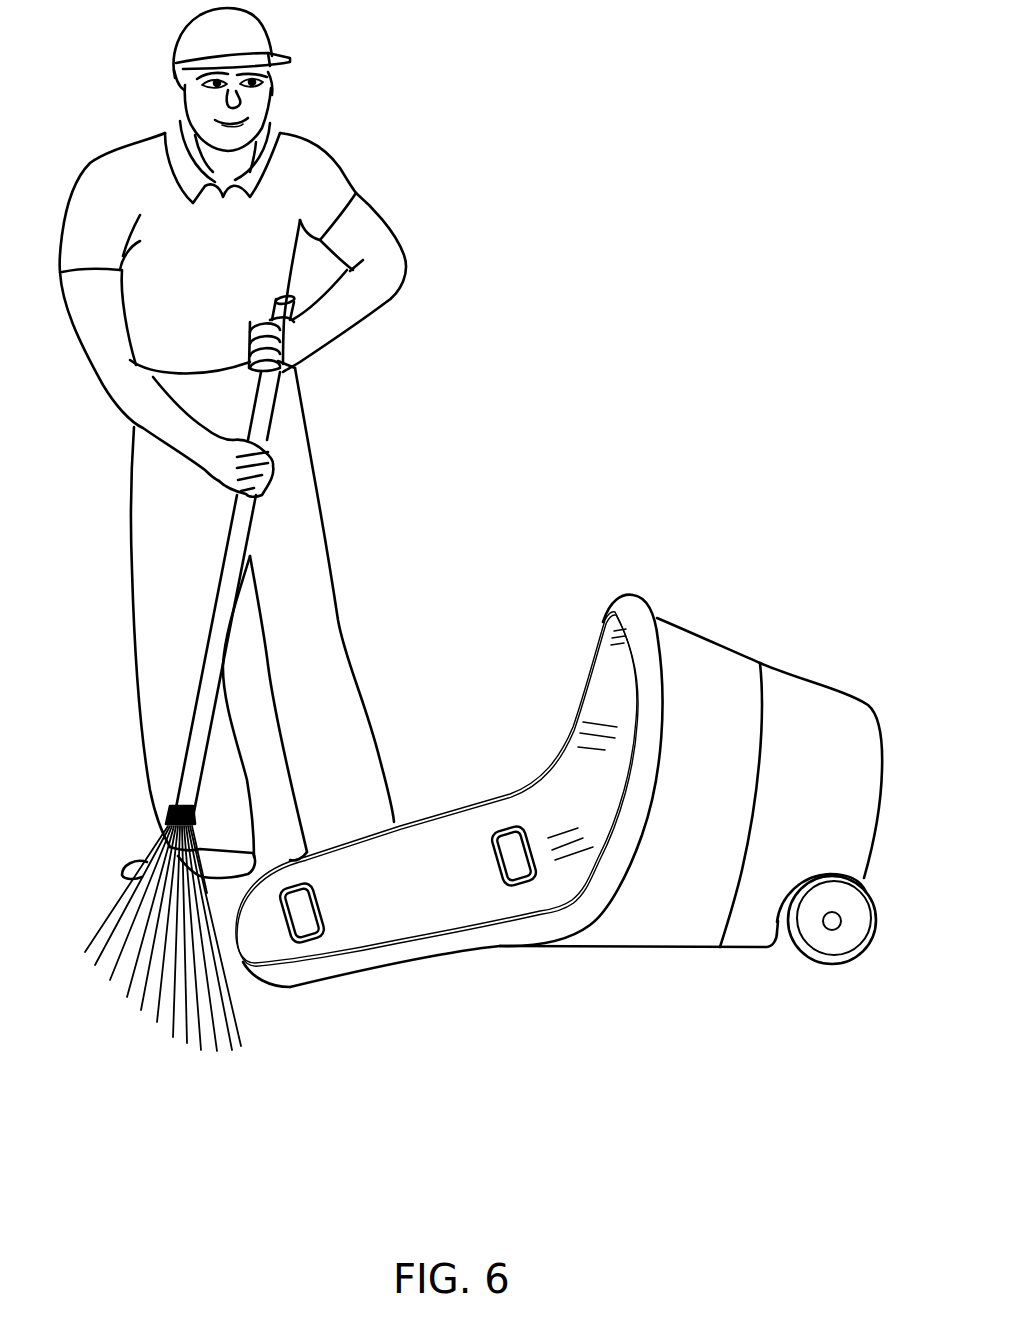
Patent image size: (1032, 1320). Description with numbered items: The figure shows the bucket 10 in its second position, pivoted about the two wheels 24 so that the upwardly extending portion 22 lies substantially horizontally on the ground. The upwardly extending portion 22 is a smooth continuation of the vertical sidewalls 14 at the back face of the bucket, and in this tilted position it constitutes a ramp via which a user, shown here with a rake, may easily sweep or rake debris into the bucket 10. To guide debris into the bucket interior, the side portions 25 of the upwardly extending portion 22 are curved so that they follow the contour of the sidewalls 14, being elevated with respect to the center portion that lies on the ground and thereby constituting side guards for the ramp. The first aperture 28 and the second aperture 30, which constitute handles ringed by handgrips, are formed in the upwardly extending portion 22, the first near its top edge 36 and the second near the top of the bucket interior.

The bucket 10 is at (583, 869).
The vertical sidewalls 14 is at (690, 890).
The upwardly extending portion 22 is at (398, 906).
The wheels 24 is at (832, 922).
The side portions 25 is at (585, 768).
The first aperture 28 is at (302, 914).
The second aperture 30 is at (517, 862).
The top edge 36 is at (241, 954).